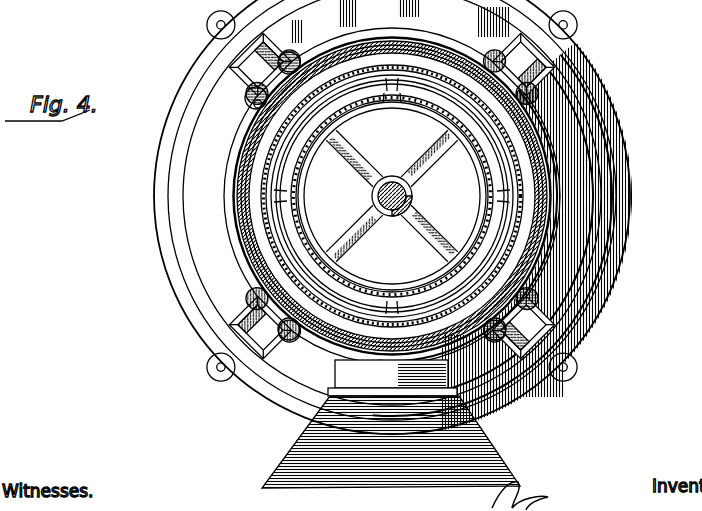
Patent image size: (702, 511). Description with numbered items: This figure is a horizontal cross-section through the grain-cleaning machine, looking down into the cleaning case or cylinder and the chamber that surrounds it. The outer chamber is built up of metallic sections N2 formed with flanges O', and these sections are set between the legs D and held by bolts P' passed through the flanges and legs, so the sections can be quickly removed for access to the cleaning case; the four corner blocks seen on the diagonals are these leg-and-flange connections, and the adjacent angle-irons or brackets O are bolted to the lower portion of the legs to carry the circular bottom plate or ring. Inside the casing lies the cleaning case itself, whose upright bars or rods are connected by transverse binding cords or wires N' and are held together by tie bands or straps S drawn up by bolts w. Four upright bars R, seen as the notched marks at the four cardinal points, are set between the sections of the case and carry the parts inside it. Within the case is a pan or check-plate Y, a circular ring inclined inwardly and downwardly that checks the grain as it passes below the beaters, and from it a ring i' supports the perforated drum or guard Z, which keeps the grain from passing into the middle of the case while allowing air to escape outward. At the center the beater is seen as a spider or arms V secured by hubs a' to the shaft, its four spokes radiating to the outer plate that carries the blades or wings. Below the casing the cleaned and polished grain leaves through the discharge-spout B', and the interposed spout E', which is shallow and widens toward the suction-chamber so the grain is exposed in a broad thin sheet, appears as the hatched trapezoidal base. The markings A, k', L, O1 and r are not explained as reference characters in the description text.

The casing or frame A is at (397, 220).
The metallic sections N2 is at (392, 194).
The bolts w is at (248, 193).
The binding cords or wires N' is at (360, 196).
The tie bands or straps S is at (266, 237).
The upright bars R is at (300, 106).
The pan or check-plate Y is at (406, 97).
The drum or guard Z is at (392, 196).
The spider or arms V is at (392, 196).
The spoke k' is at (337, 168).
The hubs a' is at (405, 195).
The shaft L is at (392, 182).
The clamp block B is at (262, 195).
The legs D is at (520, 195).
The boss O1 is at (295, 53).
The bolts P' is at (243, 98).
The flanges O' is at (238, 118).
The angle-irons or brackets O is at (393, 305).
The ring i' is at (486, 157).
The ring r is at (480, 187).
The discharge-spout B' is at (391, 374).
The spout E' is at (391, 447).